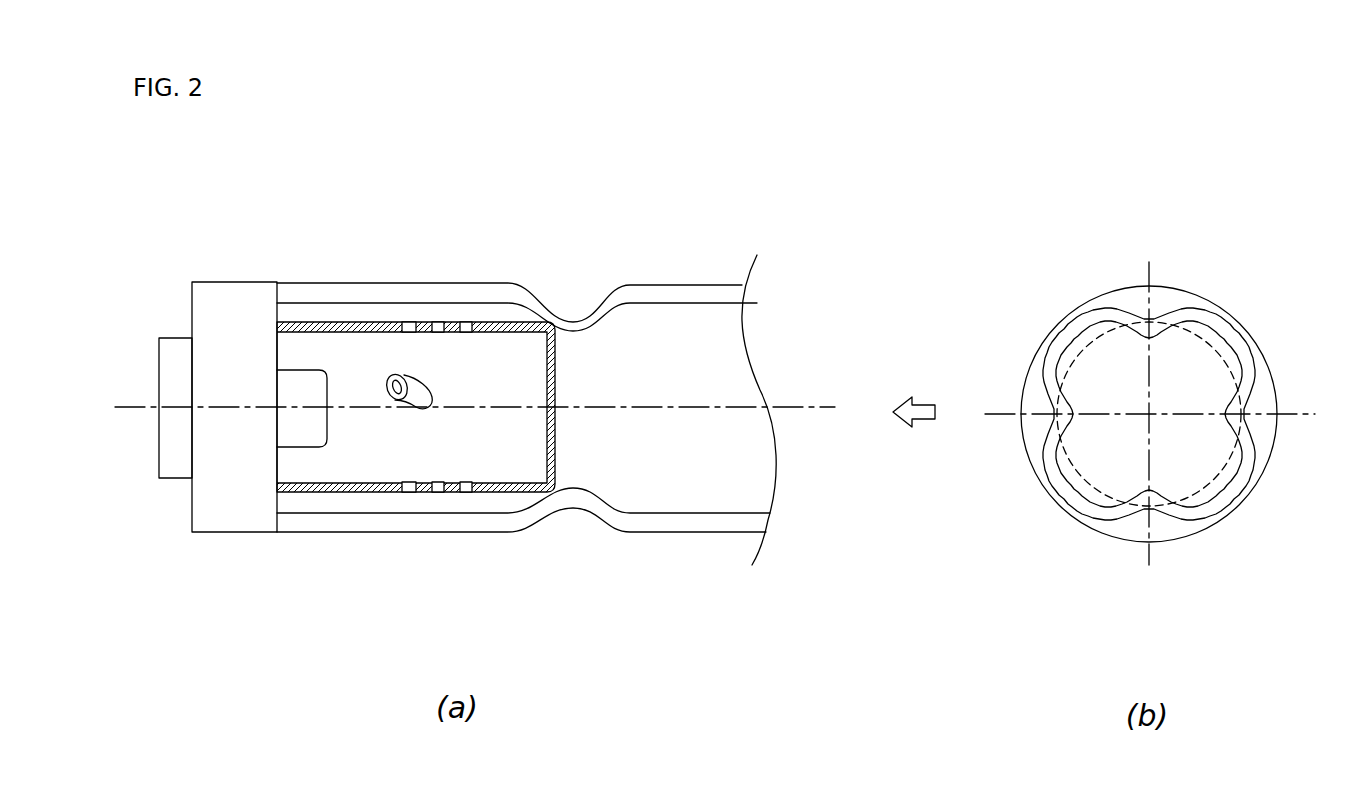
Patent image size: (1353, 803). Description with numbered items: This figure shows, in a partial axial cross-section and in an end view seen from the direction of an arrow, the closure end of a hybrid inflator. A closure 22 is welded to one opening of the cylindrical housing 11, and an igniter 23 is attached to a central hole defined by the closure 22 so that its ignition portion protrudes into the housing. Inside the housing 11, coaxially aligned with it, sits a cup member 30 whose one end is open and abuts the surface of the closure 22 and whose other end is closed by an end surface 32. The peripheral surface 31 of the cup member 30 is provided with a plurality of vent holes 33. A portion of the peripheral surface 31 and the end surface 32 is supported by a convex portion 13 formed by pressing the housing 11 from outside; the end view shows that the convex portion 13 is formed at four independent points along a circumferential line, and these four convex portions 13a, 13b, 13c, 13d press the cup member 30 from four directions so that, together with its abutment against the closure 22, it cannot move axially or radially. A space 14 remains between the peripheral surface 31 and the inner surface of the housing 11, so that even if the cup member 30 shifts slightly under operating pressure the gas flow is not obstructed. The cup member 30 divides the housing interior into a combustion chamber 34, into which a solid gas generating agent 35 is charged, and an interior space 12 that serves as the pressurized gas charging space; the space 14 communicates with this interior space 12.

The cylindrical housing 11 is at (687, 286).
The interior space 12 is at (703, 342).
The convex portion 13 is at (573, 327).
The convex portion 13a is at (1147, 340).
The convex portion 13b is at (1222, 413).
The convex portion 13c is at (1148, 487).
The convex portion 13d is at (1080, 414).
The space 14 is at (497, 500).
The closure 22 is at (213, 325).
The igniter 23 is at (183, 375).
The cup member 30 is at (330, 495).
The peripheral surface 31 is at (373, 495).
The end surface 32 is at (558, 446).
The vent holes 33 is at (465, 495).
The combustion chamber 34 is at (373, 444).
The solid gas generating agent 35 is at (432, 394).